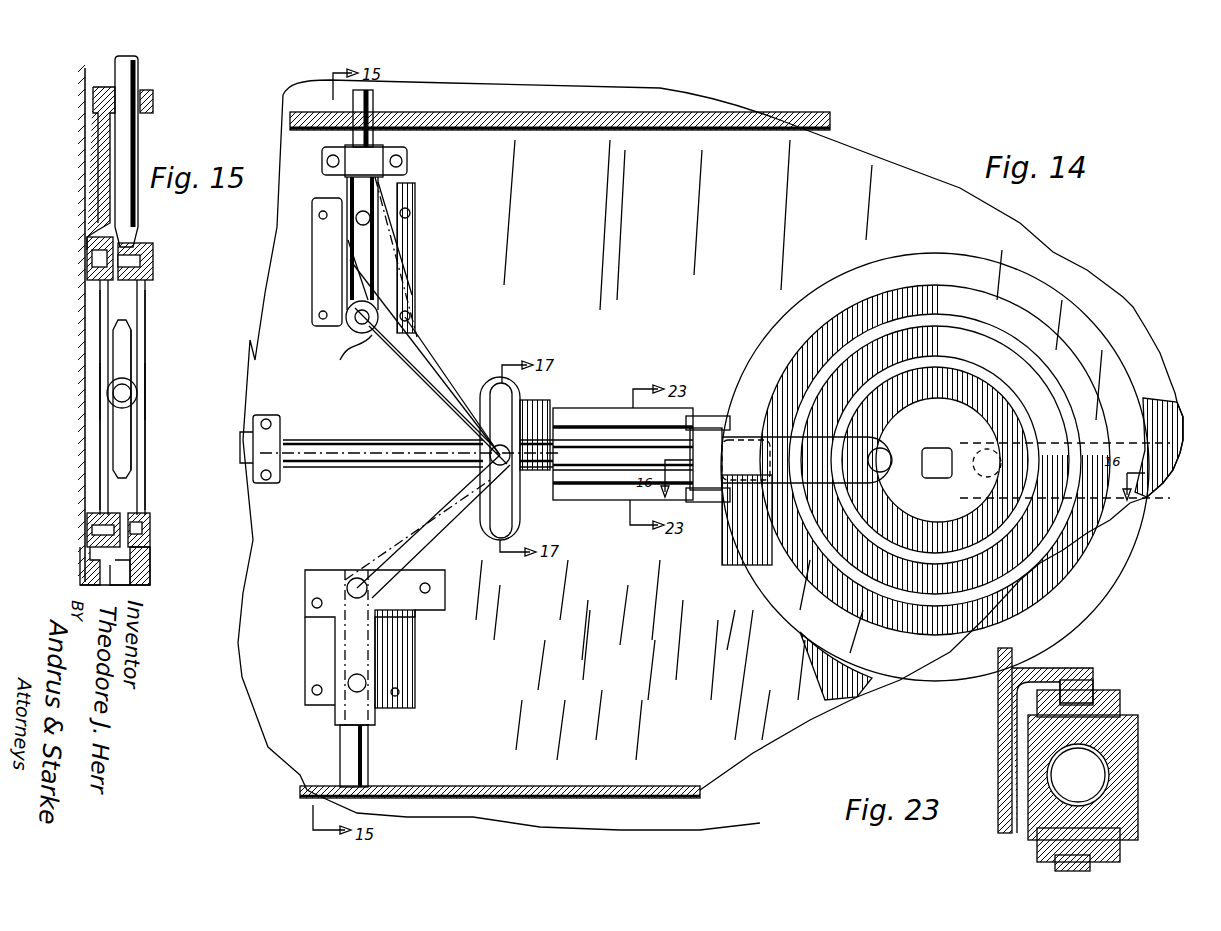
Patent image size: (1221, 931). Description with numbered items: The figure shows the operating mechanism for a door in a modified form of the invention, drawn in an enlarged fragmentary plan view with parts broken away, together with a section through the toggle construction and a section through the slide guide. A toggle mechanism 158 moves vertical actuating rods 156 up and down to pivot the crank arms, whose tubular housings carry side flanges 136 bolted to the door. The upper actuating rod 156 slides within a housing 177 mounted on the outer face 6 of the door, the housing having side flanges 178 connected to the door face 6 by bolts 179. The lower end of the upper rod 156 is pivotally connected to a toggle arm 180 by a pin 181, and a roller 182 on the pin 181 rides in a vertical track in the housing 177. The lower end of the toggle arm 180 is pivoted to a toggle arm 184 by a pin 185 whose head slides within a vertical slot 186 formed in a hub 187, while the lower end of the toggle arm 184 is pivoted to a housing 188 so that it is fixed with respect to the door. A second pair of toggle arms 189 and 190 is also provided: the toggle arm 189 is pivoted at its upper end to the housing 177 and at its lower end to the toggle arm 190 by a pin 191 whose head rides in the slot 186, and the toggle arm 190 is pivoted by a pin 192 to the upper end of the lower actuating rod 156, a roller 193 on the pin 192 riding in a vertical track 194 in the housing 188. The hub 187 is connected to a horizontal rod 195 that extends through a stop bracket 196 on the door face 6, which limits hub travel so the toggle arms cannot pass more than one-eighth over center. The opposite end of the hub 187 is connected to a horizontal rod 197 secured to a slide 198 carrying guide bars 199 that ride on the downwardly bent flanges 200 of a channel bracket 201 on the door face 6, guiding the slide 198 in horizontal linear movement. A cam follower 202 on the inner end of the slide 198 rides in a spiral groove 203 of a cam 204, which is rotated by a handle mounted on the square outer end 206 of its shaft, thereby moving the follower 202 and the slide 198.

In FIG. 23, the outer face of door 6 is at (998, 711).
In FIG. 14, the side flanges 136 is at (380, 138).
In FIG. 14, the vertical actuating rods 156 is at (368, 755).
In FIG. 15, the vertical actuating rods 156 is at (138, 74).
In FIG. 14, the toggle mechanism 158 is at (455, 360).
In FIG. 14, the housing 177 is at (340, 185).
In FIG. 14, the side flanges 178 is at (320, 237).
In FIG. 14, the bolts 179 is at (410, 212).
In FIG. 15, the toggle arm 180 is at (145, 303).
In FIG. 14, the pin 181 is at (346, 315).
In FIG. 15, the pin 181 is at (140, 257).
In FIG. 14, the roller 182 is at (348, 330).
In FIG. 15, the roller 182 is at (150, 243).
In FIG. 14, the toggle arm 184 is at (418, 540).
In FIG. 15, the toggle arm 184 is at (138, 497).
In FIG. 14, the pin 185 is at (525, 440).
In FIG. 14, the vertical slot 186 is at (493, 392).
In FIG. 14, the hub 187 is at (498, 545).
In FIG. 14, the housing 188 is at (342, 657).
In FIG. 15, the housing 188 is at (142, 566).
In FIG. 14, the toggle arm 189 is at (360, 352).
In FIG. 15, the toggle arm 189 is at (110, 328).
In FIG. 14, the toggle arm 190 is at (415, 343).
In FIG. 15, the toggle arm 190 is at (100, 480).
In FIG. 14, the pin 191 is at (410, 461).
In FIG. 14, the pin 192 is at (348, 578).
In FIG. 15, the pin 192 is at (150, 530).
In FIG. 14, the roller 193 is at (346, 596).
In FIG. 15, the roller 193 is at (88, 518).
In FIG. 15, the vertical track 194 is at (95, 572).
In FIG. 14, the horizontal rod 195 is at (255, 445).
In FIG. 14, the stop bracket 196 is at (257, 477).
In FIG. 14, the horizontal rod 197 is at (622, 468).
In FIG. 23, the horizontal rod 197 is at (1083, 777).
In FIG. 14, the slide 198 is at (866, 440).
In FIG. 14, the guide bars 199 is at (706, 418).
In FIG. 23, the guide bars 199 is at (1120, 700).
In FIG. 14, the flanges 200 is at (583, 410).
In FIG. 23, the flanges 200 is at (1085, 692).
In FIG. 14, the channel bracket 201 is at (620, 408).
In FIG. 23, the channel bracket 201 is at (1042, 668).
In FIG. 14, the cam follower 202 is at (980, 480).
In FIG. 14, the spiral groove 203 is at (1000, 345).
In FIG. 14, the cam 204 is at (997, 248).
In FIG. 14, the square outer end 206 is at (957, 437).